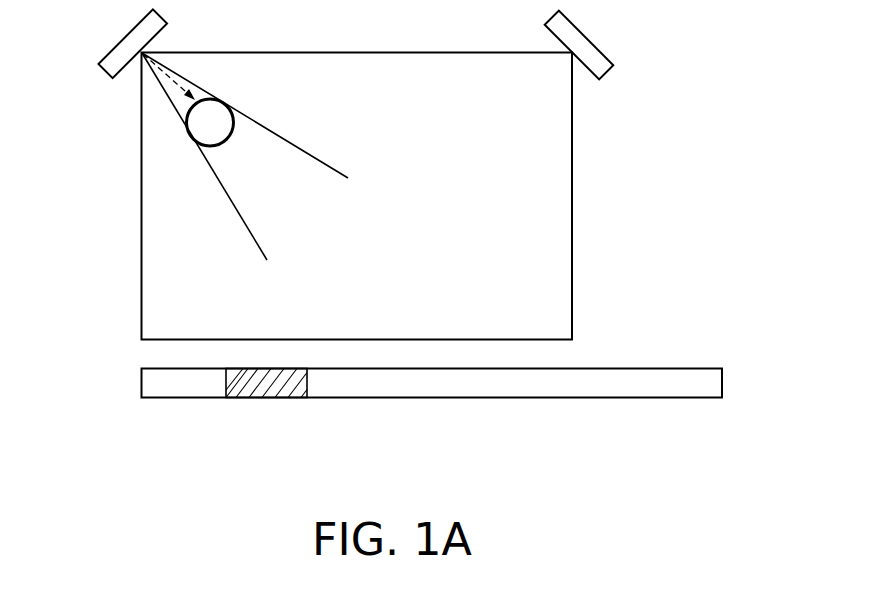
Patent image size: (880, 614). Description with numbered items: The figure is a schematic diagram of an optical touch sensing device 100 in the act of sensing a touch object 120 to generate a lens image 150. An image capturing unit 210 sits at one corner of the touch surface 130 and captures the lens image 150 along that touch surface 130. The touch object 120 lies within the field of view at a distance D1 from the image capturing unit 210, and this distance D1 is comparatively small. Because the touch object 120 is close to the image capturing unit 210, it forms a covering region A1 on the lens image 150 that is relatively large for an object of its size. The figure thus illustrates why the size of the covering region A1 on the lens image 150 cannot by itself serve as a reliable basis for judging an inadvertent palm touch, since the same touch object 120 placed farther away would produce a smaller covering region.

The optical touch sensing device 100 is at (415, 234).
The touch object 120 is at (222, 133).
The touch surface 130 is at (573, 218).
The lens image 150 is at (435, 393).
The image capturing unit 210 is at (110, 51).
The distance D1 is at (172, 82).
The covering region A1 is at (307, 399).